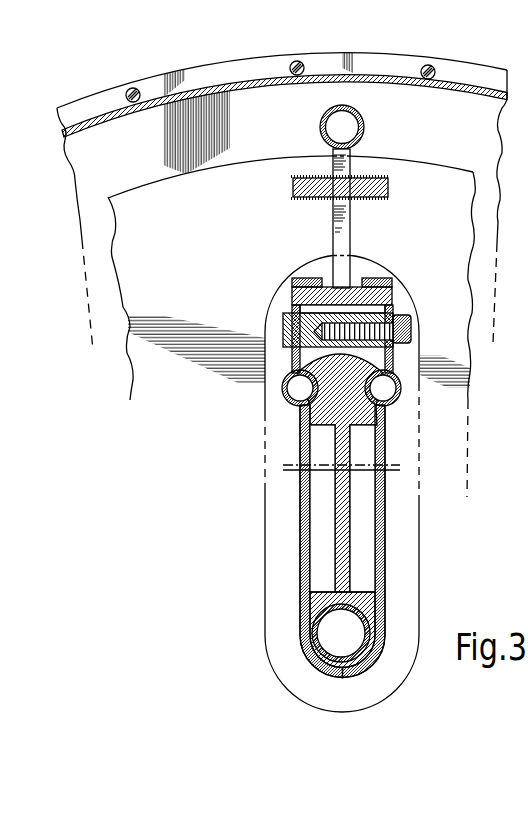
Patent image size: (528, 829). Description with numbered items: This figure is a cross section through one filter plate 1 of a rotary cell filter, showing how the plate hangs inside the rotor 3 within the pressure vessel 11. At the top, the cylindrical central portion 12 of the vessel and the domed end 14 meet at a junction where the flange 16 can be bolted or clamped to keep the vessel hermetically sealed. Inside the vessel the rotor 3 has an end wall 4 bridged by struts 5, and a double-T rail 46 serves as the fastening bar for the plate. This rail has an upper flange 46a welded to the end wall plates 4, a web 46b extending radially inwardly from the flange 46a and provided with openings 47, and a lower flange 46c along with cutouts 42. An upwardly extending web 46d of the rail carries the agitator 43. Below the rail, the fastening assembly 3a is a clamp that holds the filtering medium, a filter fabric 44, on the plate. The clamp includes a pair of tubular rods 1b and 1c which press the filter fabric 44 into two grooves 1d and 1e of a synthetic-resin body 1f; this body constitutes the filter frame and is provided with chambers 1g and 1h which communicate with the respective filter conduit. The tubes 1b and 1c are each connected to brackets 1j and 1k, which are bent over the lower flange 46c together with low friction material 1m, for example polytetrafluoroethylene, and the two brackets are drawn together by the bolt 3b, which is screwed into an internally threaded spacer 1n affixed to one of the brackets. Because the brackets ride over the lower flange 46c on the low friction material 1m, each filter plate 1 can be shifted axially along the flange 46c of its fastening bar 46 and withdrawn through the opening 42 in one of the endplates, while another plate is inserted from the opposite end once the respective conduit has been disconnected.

The filter plate 1 is at (294, 525).
The tubular rod 1b is at (282, 392).
The tubular rod 1c is at (401, 395).
The groove 1d is at (300, 412).
The groove 1e is at (385, 417).
The synthetic-resin body 1f is at (302, 612).
The chamber 1g is at (322, 572).
The chamber 1h is at (363, 574).
The bracket 1j is at (292, 362).
The bracket 1k is at (397, 362).
The low friction material 1m is at (393, 282).
The internal threaded spacer 1n is at (283, 334).
The rotor 3 is at (274, 152).
The fastening assembly 3a is at (401, 302).
The bolt 3b is at (412, 320).
The end wall 4 is at (304, 483).
The strut 5 is at (401, 197).
The pressure vessel 11 is at (145, 72).
The cylindrical central portion 12 is at (232, 80).
The domed end 14 is at (90, 166).
The flange 16 is at (478, 77).
The cutout 42 is at (280, 421).
The agitator 43 is at (364, 129).
The filter fabric 44 is at (385, 552).
The double-T rail 46 is at (356, 236).
The upper flange 46a is at (293, 190).
The web 46b is at (353, 213).
The lower flange 46c is at (290, 297).
The upwardly extending web 46d is at (352, 166).
The opening 47 is at (341, 233).